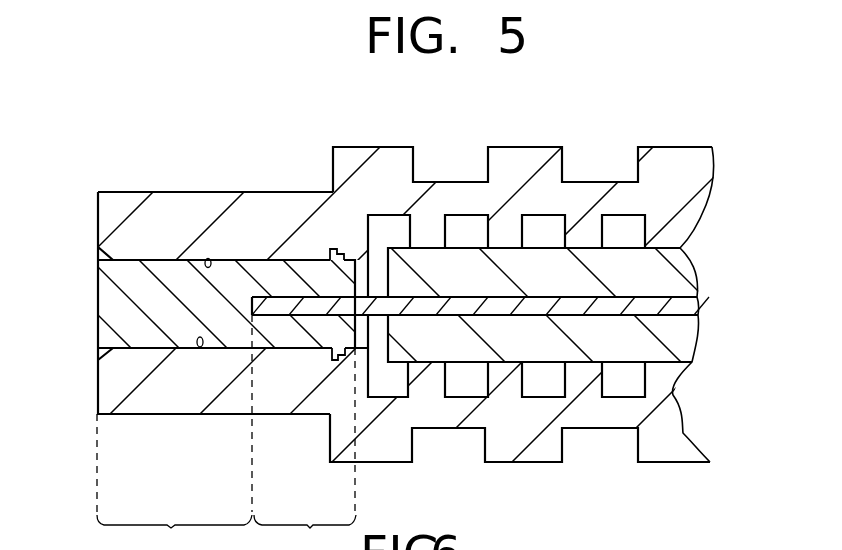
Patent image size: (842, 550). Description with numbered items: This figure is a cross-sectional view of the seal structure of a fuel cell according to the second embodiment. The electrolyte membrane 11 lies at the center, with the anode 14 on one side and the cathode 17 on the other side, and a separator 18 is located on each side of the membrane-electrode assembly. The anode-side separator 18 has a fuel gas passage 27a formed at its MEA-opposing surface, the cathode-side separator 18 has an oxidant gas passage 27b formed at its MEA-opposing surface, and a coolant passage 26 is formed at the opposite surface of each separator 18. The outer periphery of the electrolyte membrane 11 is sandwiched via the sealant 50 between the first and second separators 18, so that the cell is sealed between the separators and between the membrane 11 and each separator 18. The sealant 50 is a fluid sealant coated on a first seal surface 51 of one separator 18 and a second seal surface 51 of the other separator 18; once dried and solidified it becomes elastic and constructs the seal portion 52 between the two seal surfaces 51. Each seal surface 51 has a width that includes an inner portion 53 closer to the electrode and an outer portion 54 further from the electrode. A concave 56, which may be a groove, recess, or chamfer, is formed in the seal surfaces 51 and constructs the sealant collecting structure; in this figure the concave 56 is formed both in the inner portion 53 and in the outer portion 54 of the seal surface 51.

The electrolyte membrane 11 is at (373, 297).
The anode 14 is at (653, 340).
The cathode 17 is at (655, 275).
The separator 18 is at (180, 207).
The coolant passage 26 is at (453, 182).
The fuel gas passage 27a is at (390, 372).
The oxidant gas passage 27b is at (385, 223).
The sealant 50 is at (180, 327).
The seal surface 51 is at (207, 258).
The seal portion 52 is at (157, 280).
The inner portion 53 is at (305, 449).
The outer portion 54 is at (174, 432).
The concave 56 is at (337, 243).